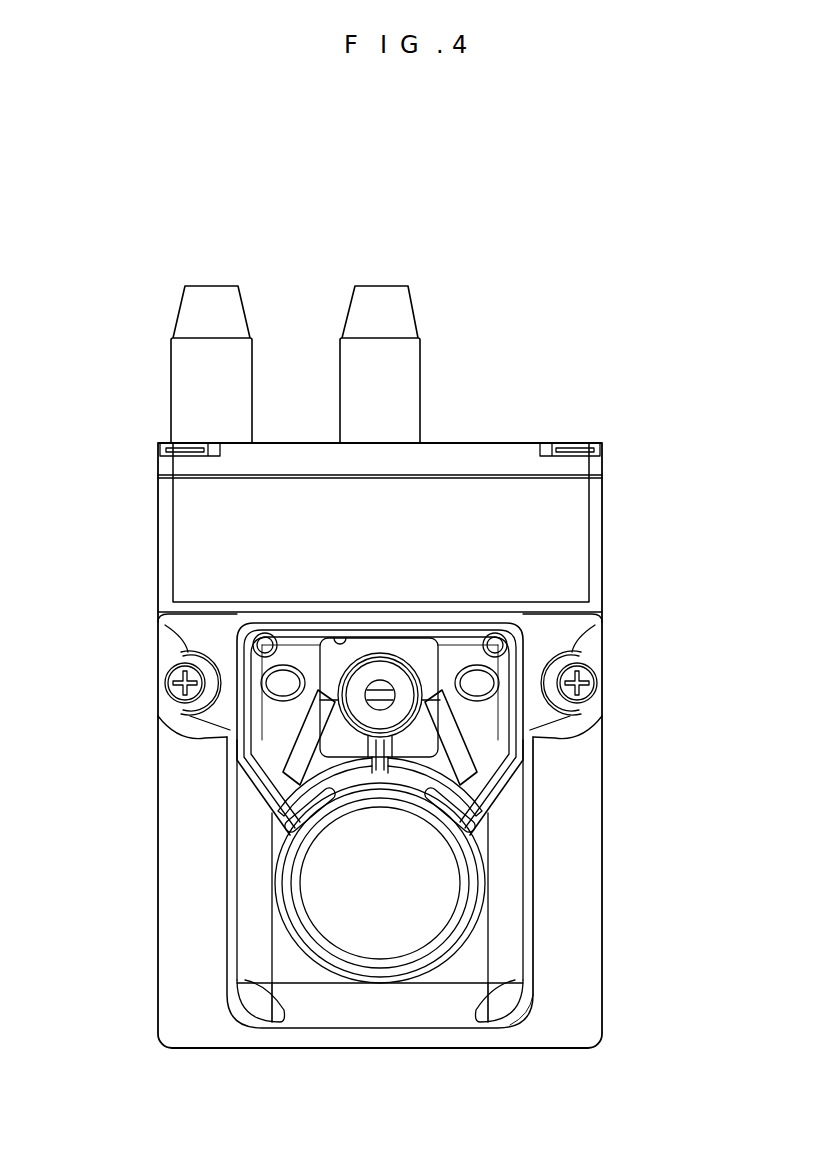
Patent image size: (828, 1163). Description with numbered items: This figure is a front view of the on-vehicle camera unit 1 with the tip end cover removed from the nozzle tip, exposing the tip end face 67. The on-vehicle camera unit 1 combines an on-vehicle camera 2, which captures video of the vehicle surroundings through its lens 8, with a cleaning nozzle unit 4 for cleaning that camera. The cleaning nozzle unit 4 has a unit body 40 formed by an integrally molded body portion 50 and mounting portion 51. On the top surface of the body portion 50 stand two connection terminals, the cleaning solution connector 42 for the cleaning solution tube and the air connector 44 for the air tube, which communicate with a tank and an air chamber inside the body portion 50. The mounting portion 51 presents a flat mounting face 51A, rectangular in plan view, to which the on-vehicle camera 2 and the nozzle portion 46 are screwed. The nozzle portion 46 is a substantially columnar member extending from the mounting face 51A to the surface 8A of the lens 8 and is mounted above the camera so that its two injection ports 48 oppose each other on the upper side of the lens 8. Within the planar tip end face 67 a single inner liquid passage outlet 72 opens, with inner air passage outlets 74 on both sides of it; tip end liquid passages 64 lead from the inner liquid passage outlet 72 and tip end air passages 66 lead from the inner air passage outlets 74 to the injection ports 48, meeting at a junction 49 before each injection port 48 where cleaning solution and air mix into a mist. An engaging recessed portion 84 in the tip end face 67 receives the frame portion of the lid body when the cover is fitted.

The on-vehicle camera unit 1 is at (378, 186).
The on-vehicle camera 2 is at (211, 922).
The cleaning nozzle unit 4 is at (124, 545).
The lens 8 is at (383, 935).
The surface of the lens 8A is at (399, 895).
The unit body 40 is at (549, 437).
The cleaning solution connector 42 is at (190, 368).
The air connector 44 is at (412, 368).
The nozzle portion 46 is at (221, 650).
The injection port 48 is at (285, 792).
The junction 49 is at (275, 800).
The body portion 50 is at (597, 510).
The mounting portion 51 is at (602, 953).
The mounting face 51A is at (572, 972).
The tip end liquid passage 64 is at (290, 740).
The tip end air passage 66 is at (265, 712).
The tip end face 67 is at (460, 640).
The inner liquid passage outlet 72 is at (380, 695).
The inner air passage outlet 74 is at (263, 692).
The engaging recessed portion 84 is at (338, 640).